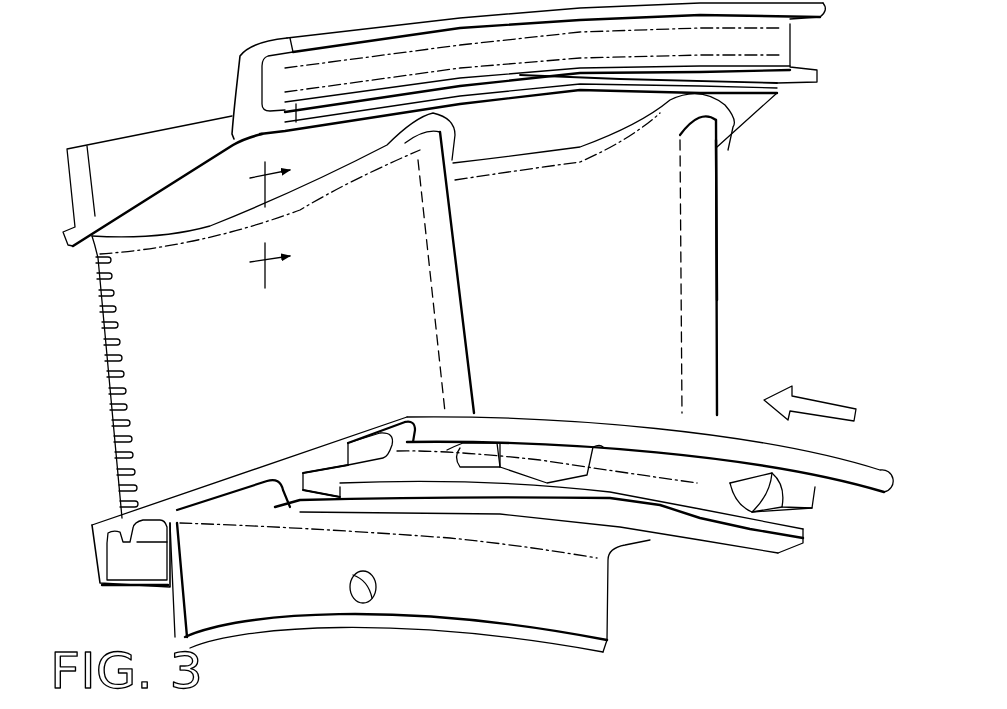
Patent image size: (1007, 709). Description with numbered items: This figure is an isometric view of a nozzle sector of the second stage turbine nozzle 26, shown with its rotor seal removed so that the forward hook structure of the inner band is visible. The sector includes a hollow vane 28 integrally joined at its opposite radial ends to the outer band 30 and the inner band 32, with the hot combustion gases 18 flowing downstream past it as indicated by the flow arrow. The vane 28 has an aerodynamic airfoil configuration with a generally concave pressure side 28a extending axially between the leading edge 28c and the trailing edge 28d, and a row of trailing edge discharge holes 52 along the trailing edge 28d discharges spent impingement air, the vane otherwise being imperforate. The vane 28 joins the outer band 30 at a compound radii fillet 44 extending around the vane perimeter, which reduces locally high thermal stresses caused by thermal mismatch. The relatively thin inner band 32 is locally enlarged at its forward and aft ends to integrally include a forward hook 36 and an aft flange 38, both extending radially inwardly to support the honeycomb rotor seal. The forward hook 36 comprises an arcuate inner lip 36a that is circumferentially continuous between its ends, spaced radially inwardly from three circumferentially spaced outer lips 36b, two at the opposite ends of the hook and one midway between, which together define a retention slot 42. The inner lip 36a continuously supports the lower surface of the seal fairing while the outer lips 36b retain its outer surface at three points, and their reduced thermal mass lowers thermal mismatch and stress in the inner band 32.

The hot combustion gases 18 is at (817, 392).
The second stage turbine nozzle 26 is at (846, 125).
The vane 28 is at (726, 249).
The pressure side 28a is at (650, 260).
The leading edge 28c is at (705, 217).
The trailing edge 28d is at (115, 452).
The outer band 30 is at (767, 103).
The inner band 32 is at (288, 457).
The forward hook 36 is at (280, 503).
The inner lip 36a is at (783, 553).
The outer lips 36b is at (328, 466).
The aft flange 38 is at (612, 618).
The retention slot 42 is at (793, 520).
The compound radii fillet 44 is at (229, 250).
The trailing edge discharge holes 52 is at (130, 393).